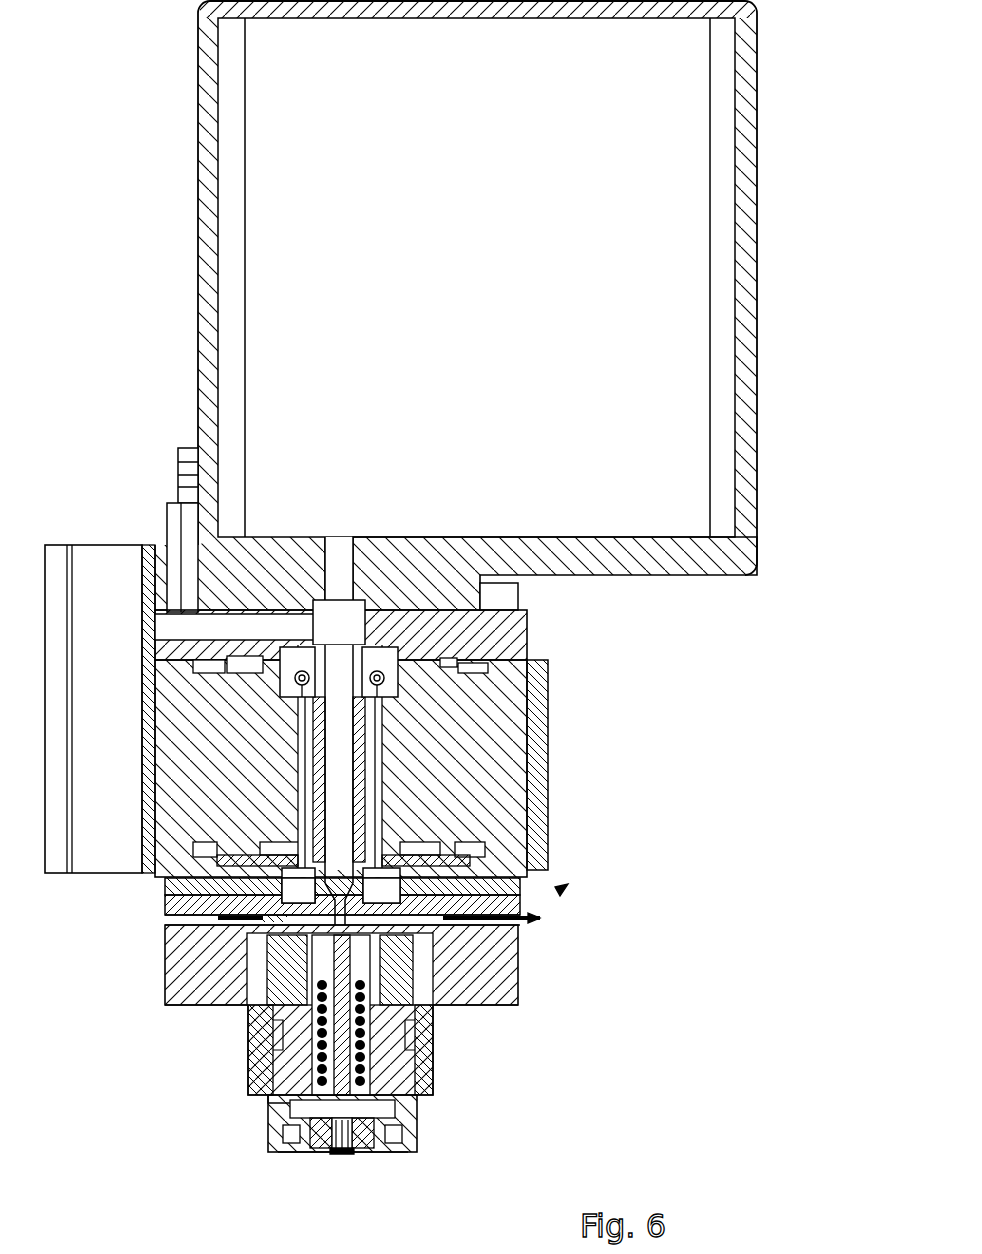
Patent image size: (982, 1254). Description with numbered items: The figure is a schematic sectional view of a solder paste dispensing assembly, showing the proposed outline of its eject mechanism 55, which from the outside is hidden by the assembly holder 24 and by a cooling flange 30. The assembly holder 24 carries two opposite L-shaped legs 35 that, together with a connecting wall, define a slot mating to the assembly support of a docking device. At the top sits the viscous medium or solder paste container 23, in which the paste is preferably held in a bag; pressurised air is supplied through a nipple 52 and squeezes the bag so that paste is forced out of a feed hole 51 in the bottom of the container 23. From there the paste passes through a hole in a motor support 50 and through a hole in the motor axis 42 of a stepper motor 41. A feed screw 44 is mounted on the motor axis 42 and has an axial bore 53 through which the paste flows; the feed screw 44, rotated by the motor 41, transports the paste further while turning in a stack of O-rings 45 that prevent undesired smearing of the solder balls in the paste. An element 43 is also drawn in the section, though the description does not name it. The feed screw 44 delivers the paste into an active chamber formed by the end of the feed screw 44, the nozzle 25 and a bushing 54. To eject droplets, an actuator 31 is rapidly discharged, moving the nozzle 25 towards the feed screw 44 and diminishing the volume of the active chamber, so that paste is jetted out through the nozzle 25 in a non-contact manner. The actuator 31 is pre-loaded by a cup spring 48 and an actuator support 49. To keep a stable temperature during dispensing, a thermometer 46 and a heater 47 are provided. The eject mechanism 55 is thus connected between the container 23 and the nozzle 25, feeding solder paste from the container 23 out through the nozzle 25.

The solder paste container 23 is at (203, 92).
The assembly holder 24 is at (547, 782).
The nozzle 25 is at (340, 1153).
The cooling flange 30 is at (512, 992).
The actuator 31 is at (400, 1043).
The L-shaped legs 35 is at (62, 543).
The stepper motor 41 is at (490, 762).
The motor axis 42 is at (365, 722).
The bearing plate 43 is at (460, 850).
The feed screw 44 is at (365, 965).
The O-rings 45 is at (360, 1070).
The thermometer 46 is at (265, 925).
The heater 47 is at (492, 905).
The cup spring 48 is at (400, 1118).
The actuator support 49 is at (268, 1102).
The motor support 50 is at (531, 636).
The feed hole 51 is at (330, 580).
The nipple 52 is at (178, 452).
The axial bore 53 is at (335, 952).
The bushing 54 is at (313, 1150).
The eject mechanism 55 is at (560, 890).